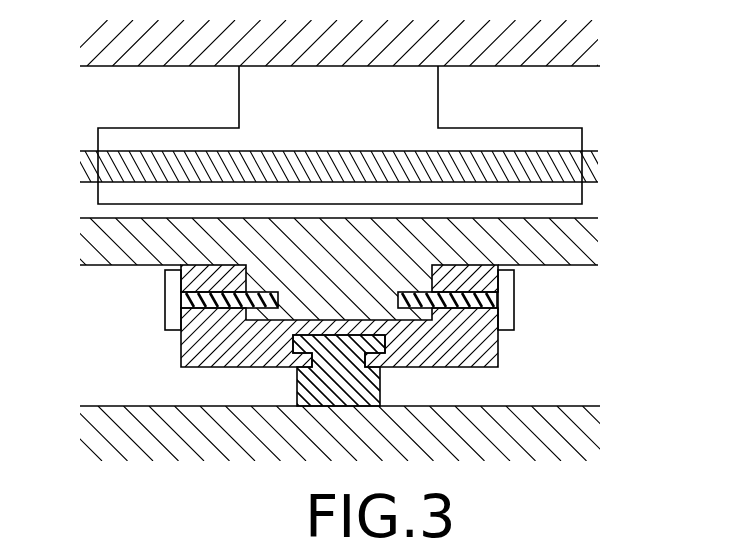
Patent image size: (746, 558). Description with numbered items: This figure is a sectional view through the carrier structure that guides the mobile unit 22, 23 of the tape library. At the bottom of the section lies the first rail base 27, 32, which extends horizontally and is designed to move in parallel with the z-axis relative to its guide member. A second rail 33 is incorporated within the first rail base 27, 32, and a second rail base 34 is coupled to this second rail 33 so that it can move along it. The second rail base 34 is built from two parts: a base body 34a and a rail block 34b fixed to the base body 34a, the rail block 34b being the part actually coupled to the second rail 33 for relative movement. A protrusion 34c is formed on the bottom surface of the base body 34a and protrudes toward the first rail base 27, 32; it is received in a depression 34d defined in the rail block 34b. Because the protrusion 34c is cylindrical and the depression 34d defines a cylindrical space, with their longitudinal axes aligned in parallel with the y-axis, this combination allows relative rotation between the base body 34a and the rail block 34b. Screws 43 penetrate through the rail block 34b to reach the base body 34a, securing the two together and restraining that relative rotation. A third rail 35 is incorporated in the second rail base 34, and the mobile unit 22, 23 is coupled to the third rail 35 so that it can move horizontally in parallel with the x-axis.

The mobile unit 22 is at (393, 112).
The mobile unit 23 is at (570, 66).
The first rail base 27 is at (386, 409).
The first rail base 32 is at (571, 406).
The second rail 33 is at (297, 388).
The second rail base 34 is at (341, 285).
The base body 34a is at (583, 266).
The rail block 34b is at (180, 353).
The protrusion 34c is at (418, 361).
The depression 34d is at (422, 273).
The third rail 35 is at (87, 150).
The screw 43 is at (167, 303).